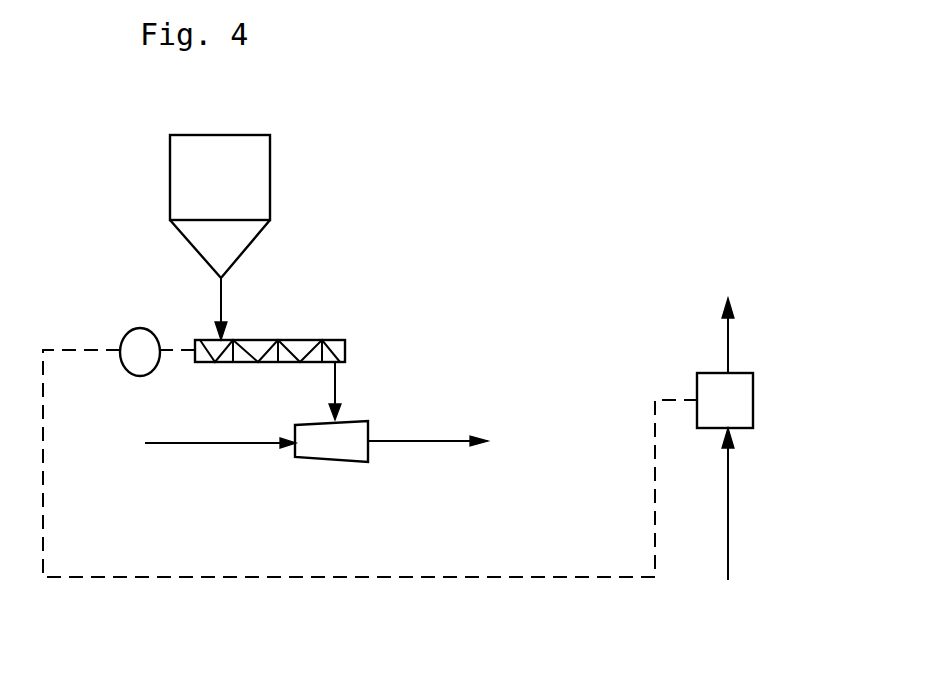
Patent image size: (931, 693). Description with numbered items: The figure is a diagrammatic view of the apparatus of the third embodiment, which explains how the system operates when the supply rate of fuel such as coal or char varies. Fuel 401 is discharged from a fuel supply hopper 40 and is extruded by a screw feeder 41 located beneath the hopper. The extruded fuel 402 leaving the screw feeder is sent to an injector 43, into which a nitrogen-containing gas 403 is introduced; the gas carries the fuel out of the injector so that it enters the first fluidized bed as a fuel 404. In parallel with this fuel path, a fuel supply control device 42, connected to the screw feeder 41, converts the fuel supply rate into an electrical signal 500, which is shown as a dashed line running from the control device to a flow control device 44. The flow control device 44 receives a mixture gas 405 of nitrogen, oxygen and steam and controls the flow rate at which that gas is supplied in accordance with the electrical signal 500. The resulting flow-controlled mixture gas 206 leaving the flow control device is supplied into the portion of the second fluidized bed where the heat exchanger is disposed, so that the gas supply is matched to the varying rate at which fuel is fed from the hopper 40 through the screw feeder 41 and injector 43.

The fuel supply hopper 40 is at (255, 182).
The fuel 401 is at (228, 296).
The screw feeder 41 is at (350, 352).
The extruded fuel 402 is at (345, 378).
The fuel supply control device 42 is at (140, 328).
The injector 43 is at (328, 462).
The nitrogen-containing gas 403 is at (178, 450).
The fuel 404 is at (427, 447).
The flow control device 44 is at (755, 403).
The mixture gas 206 is at (730, 335).
The mixture gas 405 is at (730, 528).
The electrical signal 500 is at (158, 582).